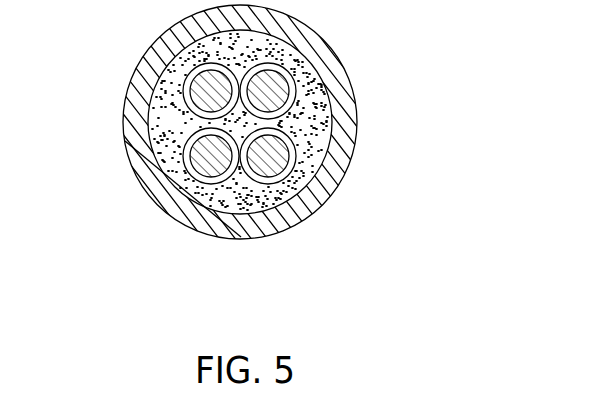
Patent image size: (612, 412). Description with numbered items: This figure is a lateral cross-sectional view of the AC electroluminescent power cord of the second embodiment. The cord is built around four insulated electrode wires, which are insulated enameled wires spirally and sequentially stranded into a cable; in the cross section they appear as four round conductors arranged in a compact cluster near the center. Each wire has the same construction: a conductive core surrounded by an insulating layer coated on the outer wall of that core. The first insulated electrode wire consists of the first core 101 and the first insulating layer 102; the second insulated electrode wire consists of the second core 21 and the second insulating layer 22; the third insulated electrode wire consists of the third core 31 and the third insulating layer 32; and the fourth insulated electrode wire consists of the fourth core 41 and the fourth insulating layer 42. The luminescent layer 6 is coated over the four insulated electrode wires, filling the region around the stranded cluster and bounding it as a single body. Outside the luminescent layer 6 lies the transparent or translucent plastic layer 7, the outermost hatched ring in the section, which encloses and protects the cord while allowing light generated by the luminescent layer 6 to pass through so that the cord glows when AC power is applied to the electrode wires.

The transparent or translucent plastic layer 7 is at (203, 237).
The luminescent layer 6 is at (235, 217).
The second insulating layer 22 is at (310, 216).
The fourth insulating layer 42 is at (160, 113).
The fourth core 41 is at (182, 66).
The first core 101 is at (280, 76).
The first insulating layer 102 is at (295, 113).
The third core 31 is at (183, 146).
The third insulating layer 32 is at (152, 197).
The second core 21 is at (318, 152).